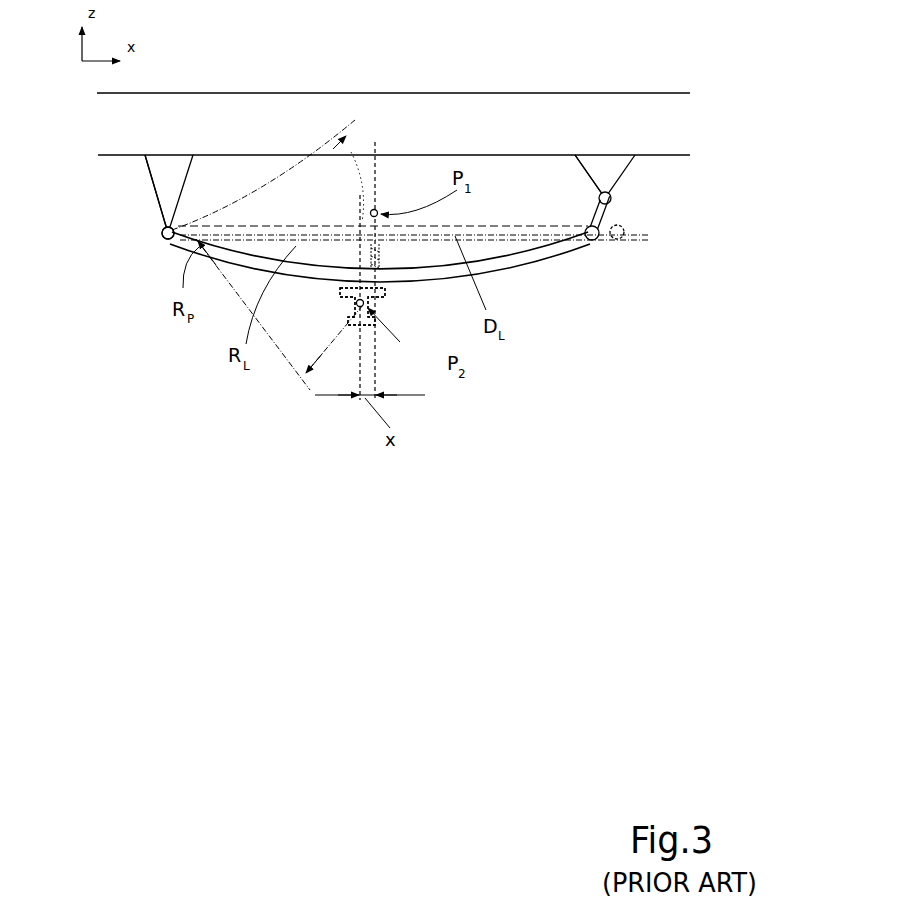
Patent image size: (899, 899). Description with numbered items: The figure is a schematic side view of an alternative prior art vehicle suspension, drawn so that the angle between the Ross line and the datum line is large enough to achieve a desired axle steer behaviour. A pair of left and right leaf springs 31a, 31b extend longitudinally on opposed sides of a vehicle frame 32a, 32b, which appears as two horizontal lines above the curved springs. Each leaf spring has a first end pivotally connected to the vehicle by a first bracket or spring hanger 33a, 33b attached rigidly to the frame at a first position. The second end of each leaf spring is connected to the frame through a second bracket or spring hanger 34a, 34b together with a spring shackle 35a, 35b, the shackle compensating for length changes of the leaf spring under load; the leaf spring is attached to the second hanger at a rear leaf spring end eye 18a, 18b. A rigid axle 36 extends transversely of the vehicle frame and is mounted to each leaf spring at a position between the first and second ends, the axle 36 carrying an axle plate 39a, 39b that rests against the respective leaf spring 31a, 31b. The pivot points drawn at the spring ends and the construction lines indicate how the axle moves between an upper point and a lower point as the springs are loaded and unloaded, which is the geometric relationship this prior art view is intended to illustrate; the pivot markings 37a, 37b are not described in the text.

The vehicle frame 32b is at (626, 84).
The vehicle frame 32a is at (637, 138).
The first bracket or spring hanger 33b is at (121, 168).
The first bracket or spring hanger 33a is at (158, 190).
The left pivot joint 37b is at (152, 236).
The left pivot bearing 37a is at (164, 240).
The second bracket or spring hanger 34b is at (648, 172).
The second bracket or spring hanger 34a is at (606, 169).
The spring shackle 35b is at (621, 215).
The spring shackle 35a is at (604, 240).
The rear leaf spring end eye 18a is at (595, 242).
The rear leaf spring end eye 18b is at (627, 241).
The leaf spring 31a is at (507, 263).
The leaf spring 31b is at (533, 227).
The axle plate 39b is at (379, 240).
The axle plate 39a is at (378, 284).
The rigid axle 36 is at (350, 298).